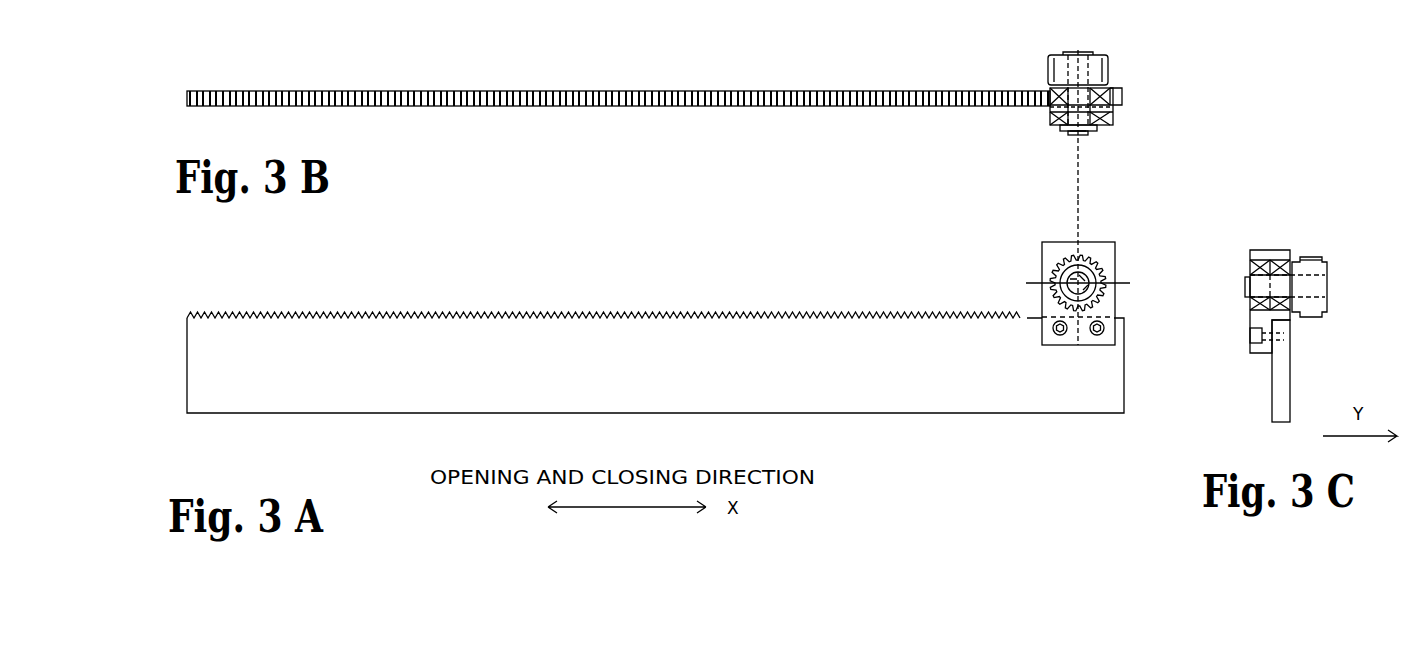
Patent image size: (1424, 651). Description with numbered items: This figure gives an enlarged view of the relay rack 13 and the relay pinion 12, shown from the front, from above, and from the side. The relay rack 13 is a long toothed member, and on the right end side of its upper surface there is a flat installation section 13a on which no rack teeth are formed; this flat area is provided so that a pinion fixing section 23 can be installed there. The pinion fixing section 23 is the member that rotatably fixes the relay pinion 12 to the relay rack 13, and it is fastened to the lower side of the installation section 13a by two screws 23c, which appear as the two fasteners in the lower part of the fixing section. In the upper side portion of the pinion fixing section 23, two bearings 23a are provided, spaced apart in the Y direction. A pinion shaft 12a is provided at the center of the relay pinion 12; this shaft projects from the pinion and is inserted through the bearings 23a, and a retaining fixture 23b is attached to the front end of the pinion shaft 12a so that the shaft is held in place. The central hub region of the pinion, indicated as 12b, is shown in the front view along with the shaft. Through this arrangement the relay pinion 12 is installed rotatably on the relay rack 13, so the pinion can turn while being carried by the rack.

In FIG. 3B, the relay pinion 12 is at (1098, 62).
In FIG. 3A, the relay pinion 12 is at (1088, 268).
In FIG. 3C, the relay pinion 12 is at (1307, 268).
In FIG. 3B, the pinion shaft 12a is at (1064, 131).
In FIG. 3C, the pinion shaft 12a is at (1246, 290).
In FIG. 3A, the pinion gear 12b is at (1083, 287).
In FIG. 3B, the relay rack 13 is at (618, 98).
In FIG. 3A, the relay rack 13 is at (655, 259).
In FIG. 3C, the relay rack 13 is at (1280, 410).
In FIG. 3A, the installation section 13a is at (1028, 315).
In FIG. 3B, the pinion fixing section 23 is at (1063, 124).
In FIG. 3A, the pinion fixing section 23 is at (1114, 329).
In FIG. 3C, the pinion fixing section 23 is at (1252, 283).
In FIG. 3B, the bearings 23a is at (1062, 93).
In FIG. 3C, the bearings 23a is at (1264, 263).
In FIG. 3B, the retaining fixture 23b is at (1096, 129).
In FIG. 3C, the retaining fixture 23b is at (1250, 267).
In FIG. 3A, the screws 23c is at (1060, 336).
In FIG. 3C, the screws 23c is at (1232, 351).